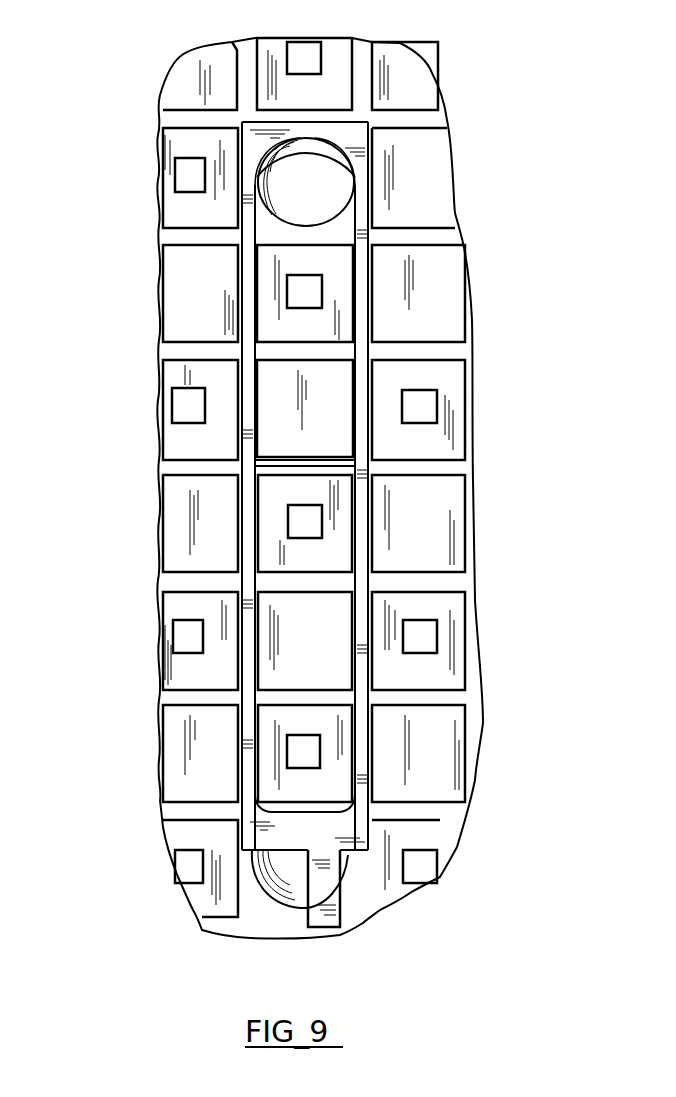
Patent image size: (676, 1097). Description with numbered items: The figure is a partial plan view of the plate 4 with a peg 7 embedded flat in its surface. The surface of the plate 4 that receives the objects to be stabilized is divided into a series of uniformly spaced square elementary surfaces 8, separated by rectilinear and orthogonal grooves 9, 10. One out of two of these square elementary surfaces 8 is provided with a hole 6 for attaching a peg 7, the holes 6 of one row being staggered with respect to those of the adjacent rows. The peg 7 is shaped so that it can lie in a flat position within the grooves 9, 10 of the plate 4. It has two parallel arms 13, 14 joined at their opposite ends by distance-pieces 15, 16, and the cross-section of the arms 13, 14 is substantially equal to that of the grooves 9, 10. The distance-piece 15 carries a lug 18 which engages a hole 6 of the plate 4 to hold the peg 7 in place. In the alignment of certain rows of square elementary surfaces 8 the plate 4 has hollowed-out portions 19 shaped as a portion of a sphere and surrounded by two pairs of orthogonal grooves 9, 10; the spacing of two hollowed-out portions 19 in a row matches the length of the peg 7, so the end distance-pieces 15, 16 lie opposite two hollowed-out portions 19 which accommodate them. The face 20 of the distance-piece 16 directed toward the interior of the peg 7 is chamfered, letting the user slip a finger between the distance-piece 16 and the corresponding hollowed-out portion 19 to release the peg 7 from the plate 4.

The plate 4 is at (185, 507).
The hole 6 is at (420, 410).
The peg 7 is at (373, 284).
The square elementary surface 8 is at (185, 672).
The groove 9 is at (242, 66).
The groove 10 is at (360, 57).
The arm 13 is at (250, 336).
The arm 14 is at (362, 500).
The distance-piece 15 is at (262, 835).
The distance-piece 16 is at (348, 135).
The lug 18 is at (325, 901).
The hollowed-out portion 19 is at (300, 185).
The face 20 is at (325, 172).